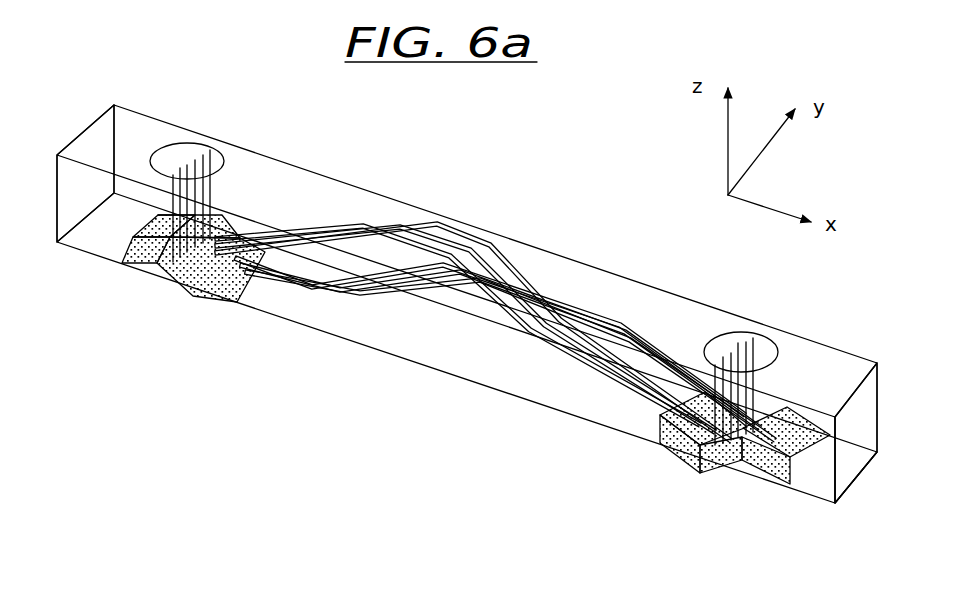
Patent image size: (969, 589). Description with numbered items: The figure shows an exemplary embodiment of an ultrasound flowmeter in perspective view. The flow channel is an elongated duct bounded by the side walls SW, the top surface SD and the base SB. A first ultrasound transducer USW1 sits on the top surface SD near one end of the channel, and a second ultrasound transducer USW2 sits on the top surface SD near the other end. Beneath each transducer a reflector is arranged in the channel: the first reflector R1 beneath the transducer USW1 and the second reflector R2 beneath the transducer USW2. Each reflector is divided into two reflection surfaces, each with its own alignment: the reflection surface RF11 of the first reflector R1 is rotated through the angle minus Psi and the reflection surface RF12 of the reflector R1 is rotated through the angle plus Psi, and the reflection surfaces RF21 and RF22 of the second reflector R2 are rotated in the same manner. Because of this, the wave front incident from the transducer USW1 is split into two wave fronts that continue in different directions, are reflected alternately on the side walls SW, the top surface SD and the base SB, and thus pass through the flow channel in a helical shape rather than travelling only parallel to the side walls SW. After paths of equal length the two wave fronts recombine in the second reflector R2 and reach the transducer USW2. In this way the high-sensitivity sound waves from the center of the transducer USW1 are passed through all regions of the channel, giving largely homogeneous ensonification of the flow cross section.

The top surface SD is at (566, 262).
The side walls SW is at (57, 193).
The base SB is at (843, 470).
The transducer USW1 is at (178, 150).
The second ultrasound transducer USW2 is at (722, 343).
The first reflector R1 is at (419, 283).
The second reflector R2 is at (748, 432).
The reflection surface RF11 is at (155, 266).
The reflection surface RF12 is at (222, 218).
The reflection surface RF21 is at (726, 468).
The reflection surface RF22 is at (757, 432).